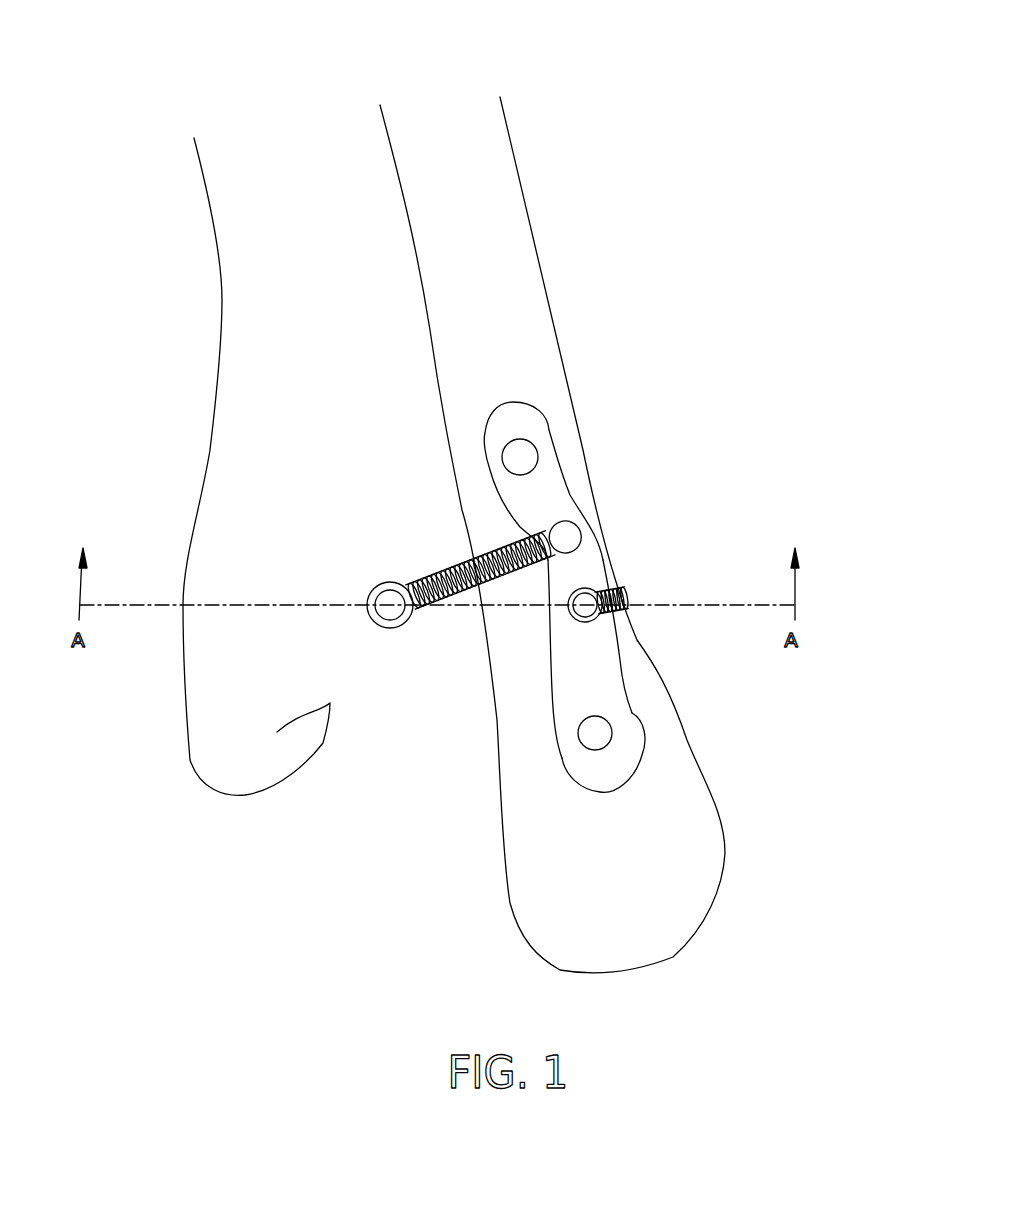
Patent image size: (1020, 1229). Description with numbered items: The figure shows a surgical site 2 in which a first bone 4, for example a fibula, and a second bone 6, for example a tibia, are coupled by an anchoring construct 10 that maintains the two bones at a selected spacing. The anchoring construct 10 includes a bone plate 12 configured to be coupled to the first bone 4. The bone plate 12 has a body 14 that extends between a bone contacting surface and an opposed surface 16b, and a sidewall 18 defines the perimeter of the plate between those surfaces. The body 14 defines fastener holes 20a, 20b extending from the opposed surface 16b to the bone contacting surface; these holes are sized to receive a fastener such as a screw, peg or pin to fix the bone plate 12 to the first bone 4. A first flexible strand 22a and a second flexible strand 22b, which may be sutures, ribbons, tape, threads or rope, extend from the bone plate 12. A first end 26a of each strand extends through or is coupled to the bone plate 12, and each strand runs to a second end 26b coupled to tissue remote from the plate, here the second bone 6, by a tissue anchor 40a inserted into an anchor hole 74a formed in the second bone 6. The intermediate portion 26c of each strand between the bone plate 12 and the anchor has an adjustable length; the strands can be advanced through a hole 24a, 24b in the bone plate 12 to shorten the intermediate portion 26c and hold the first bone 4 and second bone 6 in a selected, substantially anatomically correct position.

The surgical site 2 is at (580, 107).
The first bone 4 is at (480, 224).
The second bone 6 is at (283, 302).
The anchoring construct 10 is at (622, 496).
The bone plate 12 is at (558, 488).
The body 14 is at (637, 777).
The opposed surface 16b is at (597, 670).
The sidewall 18 is at (583, 787).
The fastener hole 20a is at (523, 440).
The fastener hole 20b is at (593, 750).
The first flexible strand 22a is at (438, 605).
The second flexible strand 22b is at (627, 595).
The hole 24a is at (585, 543).
The hole 24b is at (593, 620).
The first end 26a is at (351, 642).
The second end 26b is at (413, 592).
The intermediate portion 26c is at (515, 578).
The tissue anchor 40a is at (367, 611).
The anchor hole 74a is at (372, 623).